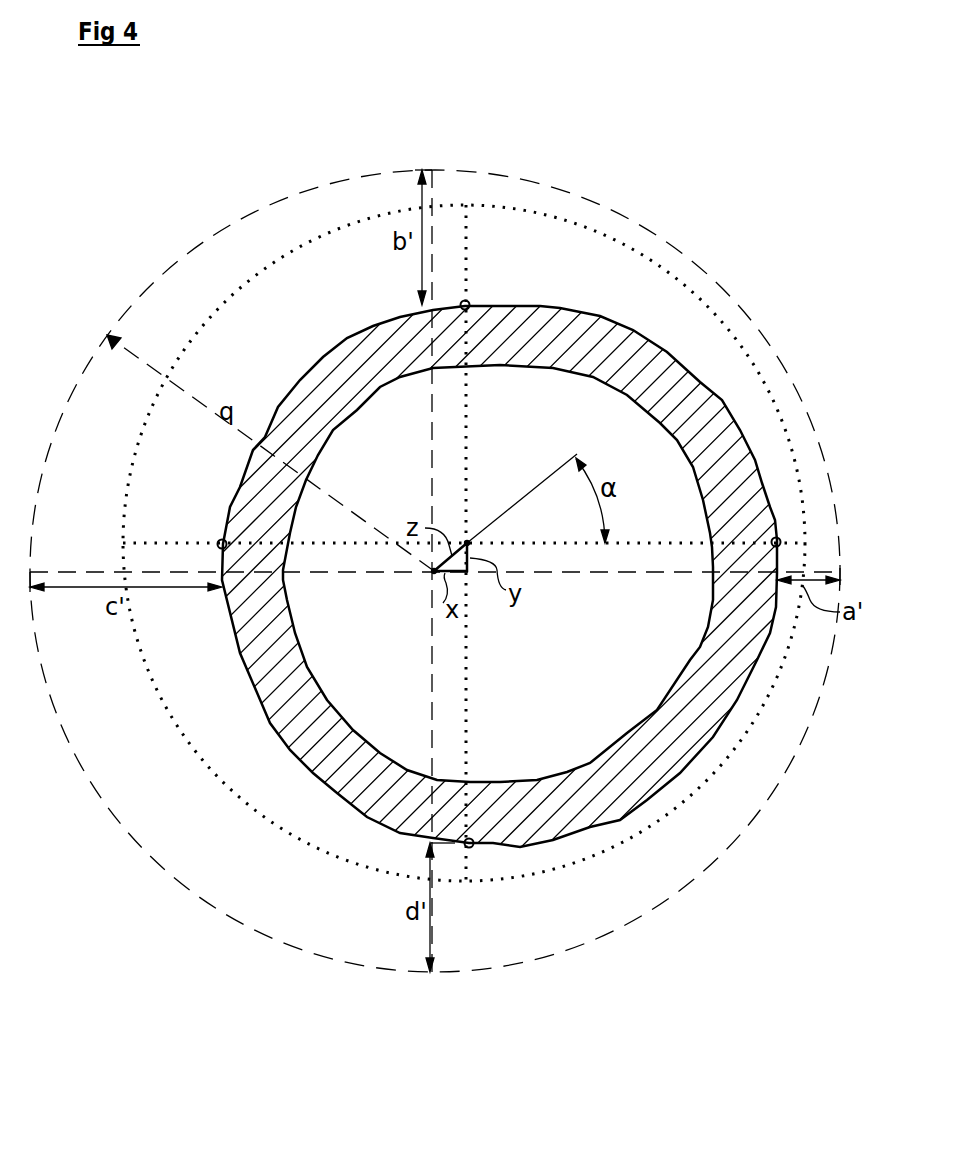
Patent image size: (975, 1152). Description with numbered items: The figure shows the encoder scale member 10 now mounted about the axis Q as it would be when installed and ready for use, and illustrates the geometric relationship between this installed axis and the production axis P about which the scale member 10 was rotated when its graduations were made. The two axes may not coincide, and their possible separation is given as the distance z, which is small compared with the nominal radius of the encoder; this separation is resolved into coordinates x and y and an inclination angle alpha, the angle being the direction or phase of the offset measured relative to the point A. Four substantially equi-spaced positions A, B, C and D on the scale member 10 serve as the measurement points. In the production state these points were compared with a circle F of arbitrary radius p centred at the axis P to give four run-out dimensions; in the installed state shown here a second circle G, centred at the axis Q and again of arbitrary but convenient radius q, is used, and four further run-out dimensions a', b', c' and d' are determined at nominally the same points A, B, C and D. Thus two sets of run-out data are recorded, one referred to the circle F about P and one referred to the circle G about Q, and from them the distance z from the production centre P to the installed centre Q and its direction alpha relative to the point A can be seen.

The encoder scale member 10 is at (646, 368).
The circle G is at (598, 202).
The circle F is at (786, 402).
The position A is at (785, 524).
The position B is at (474, 290).
The position C is at (211, 524).
The position D is at (480, 860).
The axis P is at (470, 540).
The axis Q is at (431, 576).